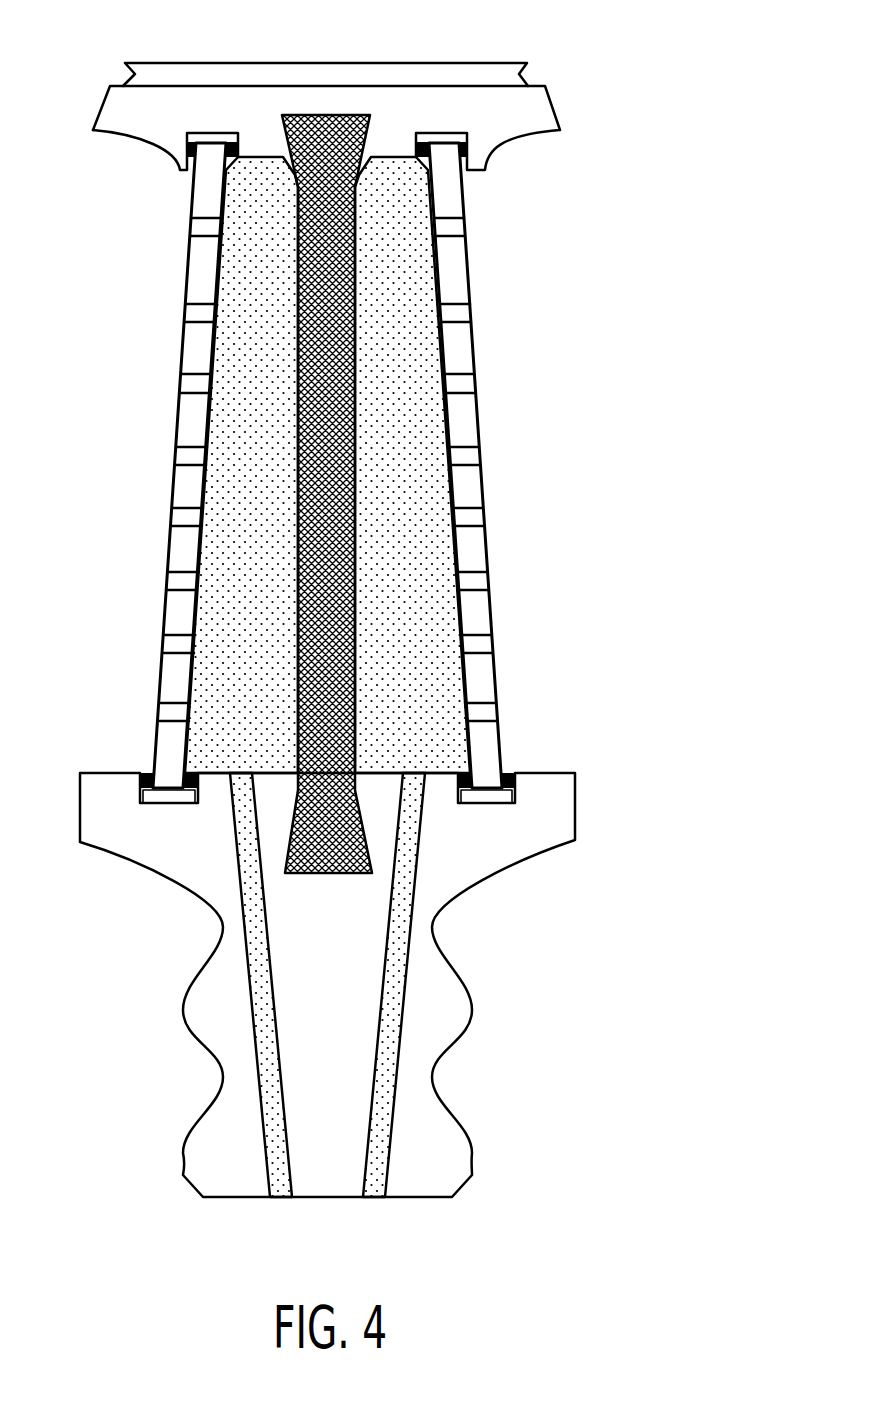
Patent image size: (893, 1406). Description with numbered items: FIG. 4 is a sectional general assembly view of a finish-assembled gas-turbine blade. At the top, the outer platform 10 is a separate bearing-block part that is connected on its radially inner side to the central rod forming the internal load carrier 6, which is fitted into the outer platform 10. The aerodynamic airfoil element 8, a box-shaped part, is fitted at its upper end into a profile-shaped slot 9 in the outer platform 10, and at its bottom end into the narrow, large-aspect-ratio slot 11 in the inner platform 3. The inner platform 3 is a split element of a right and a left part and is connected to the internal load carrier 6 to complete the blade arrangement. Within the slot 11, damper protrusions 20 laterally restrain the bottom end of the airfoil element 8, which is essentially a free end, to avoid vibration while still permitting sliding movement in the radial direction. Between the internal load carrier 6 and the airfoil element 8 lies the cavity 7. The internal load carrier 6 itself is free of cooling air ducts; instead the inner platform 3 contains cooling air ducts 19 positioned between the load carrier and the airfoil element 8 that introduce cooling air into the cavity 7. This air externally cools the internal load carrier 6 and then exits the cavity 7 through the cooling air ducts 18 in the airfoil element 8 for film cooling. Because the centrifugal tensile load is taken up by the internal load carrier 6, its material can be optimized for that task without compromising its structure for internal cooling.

The inner platform 3 is at (88, 803).
The internal load carrier 6 is at (298, 658).
The cavity 7 is at (232, 492).
The airfoil element 8 is at (190, 357).
The slot 9 is at (214, 140).
The outer platform 10 is at (140, 126).
The slot 11 is at (160, 798).
The cooling air ducts 18 is at (492, 580).
The cooling air ducts 19 is at (402, 1140).
The damper protrusions 20 is at (528, 790).